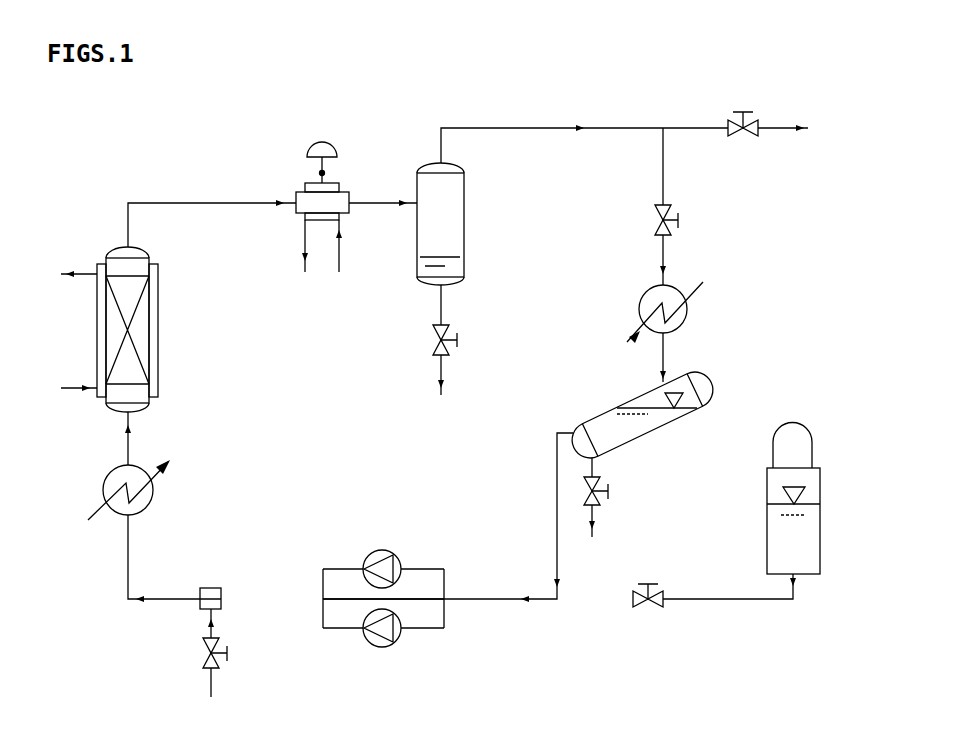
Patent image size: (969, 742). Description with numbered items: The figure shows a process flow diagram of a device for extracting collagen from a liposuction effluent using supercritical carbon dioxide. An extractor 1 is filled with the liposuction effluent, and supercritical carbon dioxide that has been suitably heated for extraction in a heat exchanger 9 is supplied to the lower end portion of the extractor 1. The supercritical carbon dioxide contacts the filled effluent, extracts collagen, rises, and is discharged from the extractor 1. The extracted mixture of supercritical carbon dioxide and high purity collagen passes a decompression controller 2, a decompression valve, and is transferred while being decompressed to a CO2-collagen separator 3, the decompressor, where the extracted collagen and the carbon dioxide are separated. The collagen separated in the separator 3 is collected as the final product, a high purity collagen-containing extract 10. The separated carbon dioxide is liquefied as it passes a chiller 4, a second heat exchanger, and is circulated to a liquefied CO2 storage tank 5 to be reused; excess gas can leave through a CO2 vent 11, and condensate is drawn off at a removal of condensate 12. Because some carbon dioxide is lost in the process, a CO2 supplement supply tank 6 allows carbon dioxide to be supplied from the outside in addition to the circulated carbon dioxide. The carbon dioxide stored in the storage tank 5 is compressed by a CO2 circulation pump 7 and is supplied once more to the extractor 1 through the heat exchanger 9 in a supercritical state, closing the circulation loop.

The extractor 1 is at (107, 329).
The decompression controller 2 is at (308, 207).
The CO2-collagen separator 3 is at (335, 430).
The chiller 4 is at (653, 312).
The liquefied CO2 storage tank 5 is at (642, 415).
The CO2 supplement supply tank 6 is at (808, 499).
The CO2 circulation pump 7 is at (383, 613).
The heat exchanger 9 is at (113, 490).
The high purity collagen-containing extract 10 is at (443, 358).
The CO2 vent 11 is at (785, 126).
The removal of condensate 12 is at (594, 513).